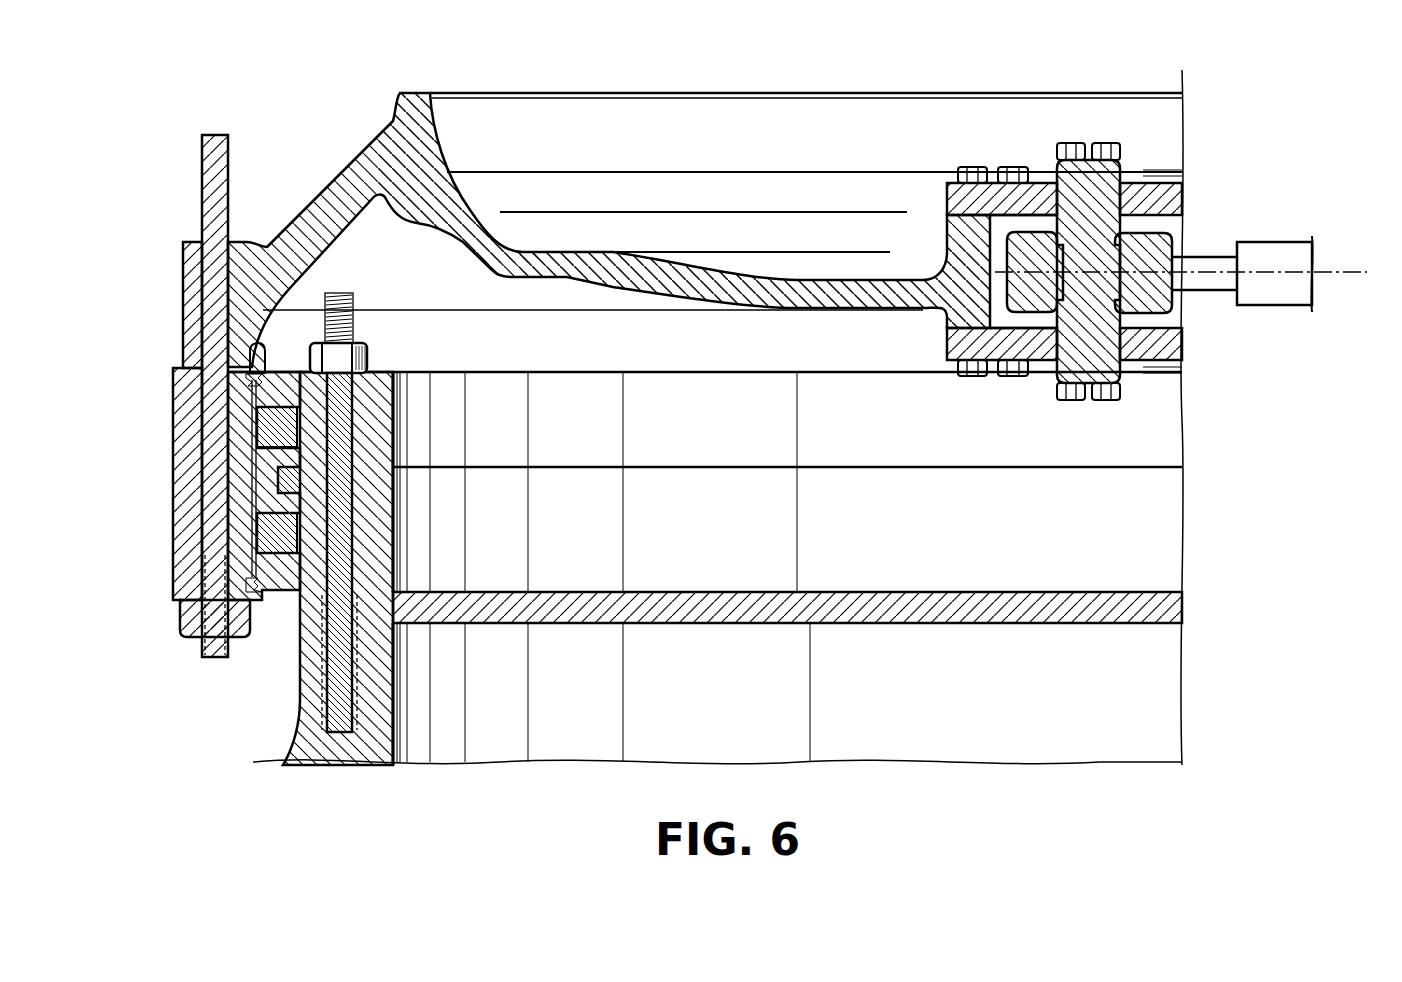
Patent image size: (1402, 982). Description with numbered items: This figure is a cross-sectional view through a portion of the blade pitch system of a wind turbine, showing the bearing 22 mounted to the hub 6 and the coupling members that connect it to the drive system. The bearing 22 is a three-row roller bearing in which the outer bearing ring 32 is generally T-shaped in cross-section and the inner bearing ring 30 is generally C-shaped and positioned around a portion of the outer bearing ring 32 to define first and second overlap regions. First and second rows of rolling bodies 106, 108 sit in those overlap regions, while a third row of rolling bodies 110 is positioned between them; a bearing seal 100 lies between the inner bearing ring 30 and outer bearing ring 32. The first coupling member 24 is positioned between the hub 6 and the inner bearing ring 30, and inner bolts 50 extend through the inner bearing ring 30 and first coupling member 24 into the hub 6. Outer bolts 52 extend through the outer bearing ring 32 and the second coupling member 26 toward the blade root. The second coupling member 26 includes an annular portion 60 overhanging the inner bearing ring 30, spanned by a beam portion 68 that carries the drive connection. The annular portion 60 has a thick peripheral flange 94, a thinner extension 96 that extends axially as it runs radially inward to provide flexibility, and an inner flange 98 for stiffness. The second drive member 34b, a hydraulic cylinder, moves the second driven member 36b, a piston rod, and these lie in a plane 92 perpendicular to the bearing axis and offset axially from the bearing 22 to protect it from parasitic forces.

The hub 6 is at (395, 735).
The bearing 22 is at (202, 395).
The first coupling member 24 is at (717, 624).
The second coupling member 26 is at (449, 86).
The inner bearing ring 30 is at (395, 440).
The outer bearing ring 32 is at (175, 505).
The second drive member 34b is at (1283, 242).
The second driven member 36b is at (1215, 255).
The inner bolts 50 is at (337, 700).
The outer bolts 52 is at (201, 150).
The annular portion 60 is at (352, 172).
The beam portion 68 is at (626, 251).
The plane 92 is at (1360, 272).
The peripheral flange 94 is at (182, 302).
The extension 96 is at (343, 240).
The inner flange 98 is at (436, 132).
The bearing seal 100 is at (250, 344).
The first row of rolling bodies 106 is at (285, 422).
The second row of rolling bodies 108 is at (293, 533).
The third row of rolling bodies 110 is at (292, 478).